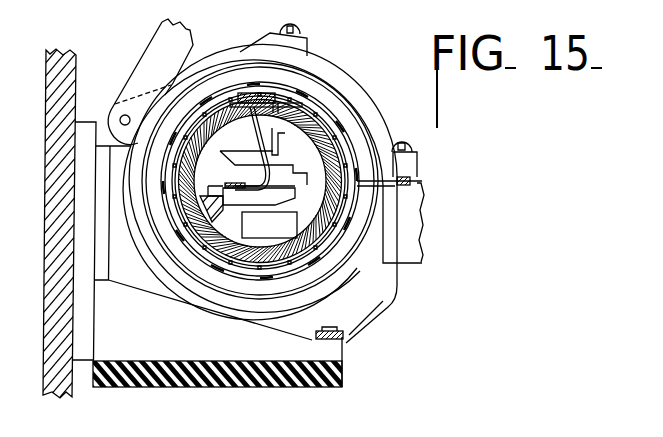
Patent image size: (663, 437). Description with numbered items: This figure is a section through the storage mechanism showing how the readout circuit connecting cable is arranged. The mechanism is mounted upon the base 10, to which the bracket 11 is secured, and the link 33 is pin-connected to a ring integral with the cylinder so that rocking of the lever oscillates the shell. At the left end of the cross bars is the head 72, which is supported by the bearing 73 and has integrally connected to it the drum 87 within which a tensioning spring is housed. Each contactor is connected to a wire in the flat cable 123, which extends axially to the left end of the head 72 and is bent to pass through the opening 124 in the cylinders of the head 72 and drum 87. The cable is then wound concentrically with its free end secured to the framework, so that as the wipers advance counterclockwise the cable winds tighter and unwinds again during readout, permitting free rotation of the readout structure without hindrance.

The base 10 is at (73, 392).
The bracket 11 is at (157, 287).
The link 33 is at (147, 52).
The head 72 is at (220, 252).
The bearing 73 is at (300, 255).
The drum 87 is at (286, 240).
The flat cable 123 is at (247, 183).
The opening 124 is at (272, 100).